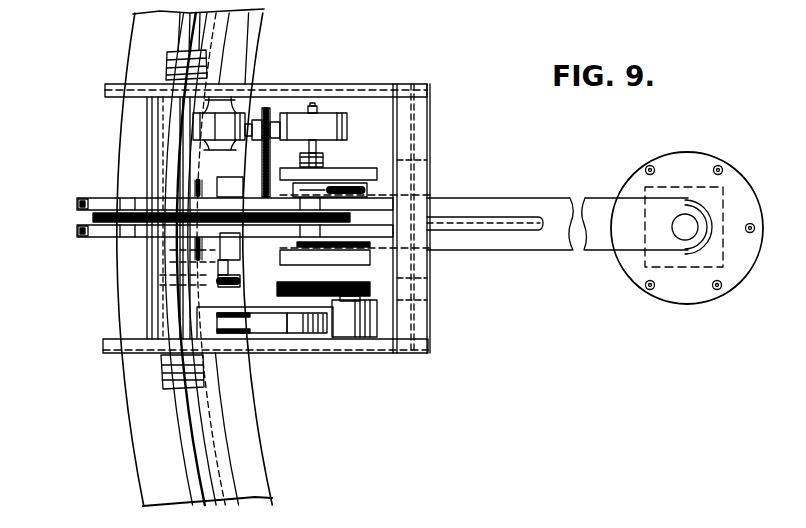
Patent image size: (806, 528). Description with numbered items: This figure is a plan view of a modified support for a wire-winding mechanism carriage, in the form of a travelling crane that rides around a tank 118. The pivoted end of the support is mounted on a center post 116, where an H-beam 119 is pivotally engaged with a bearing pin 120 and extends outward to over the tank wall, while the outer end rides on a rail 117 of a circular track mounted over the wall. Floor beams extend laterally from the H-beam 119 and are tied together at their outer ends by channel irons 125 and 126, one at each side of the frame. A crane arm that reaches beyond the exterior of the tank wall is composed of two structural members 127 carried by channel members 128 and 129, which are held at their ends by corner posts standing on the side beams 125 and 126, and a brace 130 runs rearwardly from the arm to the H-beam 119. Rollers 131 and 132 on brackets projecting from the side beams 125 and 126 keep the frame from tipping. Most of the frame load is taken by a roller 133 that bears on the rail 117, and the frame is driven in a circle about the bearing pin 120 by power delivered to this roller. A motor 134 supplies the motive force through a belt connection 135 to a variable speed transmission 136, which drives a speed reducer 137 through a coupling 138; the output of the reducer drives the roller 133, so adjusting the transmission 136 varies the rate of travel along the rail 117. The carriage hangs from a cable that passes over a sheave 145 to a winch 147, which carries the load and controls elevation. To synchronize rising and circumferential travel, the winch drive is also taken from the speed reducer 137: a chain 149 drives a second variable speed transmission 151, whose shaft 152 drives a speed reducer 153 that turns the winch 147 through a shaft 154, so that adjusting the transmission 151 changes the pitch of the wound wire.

The center post 116 is at (690, 267).
The rail 117 is at (197, 440).
The tank 118 is at (163, 468).
The H-beam 119 is at (591, 204).
The bearing pin 120 is at (672, 232).
The channel iron 125 is at (310, 350).
The channel iron 126 is at (340, 96).
The structural members 127 is at (76, 229).
The channel member 128 is at (152, 302).
The channel member 129 is at (401, 325).
The brace 130 is at (476, 222).
The roller 131 is at (203, 380).
The roller 132 is at (190, 60).
The roller 133 is at (163, 252).
The motor 134 is at (353, 335).
The belt connection 135 is at (335, 285).
The variable speed transmission 136 is at (264, 330).
The speed reducer 137 is at (239, 247).
The coupling 138 is at (238, 285).
The sheave 145 is at (83, 236).
The winch 147 is at (405, 213).
The chain 149 is at (256, 152).
The variable speed transmission 151 is at (235, 108).
The shaft 152 is at (278, 124).
The speed reducer 153 is at (347, 120).
The shaft 154 is at (320, 148).